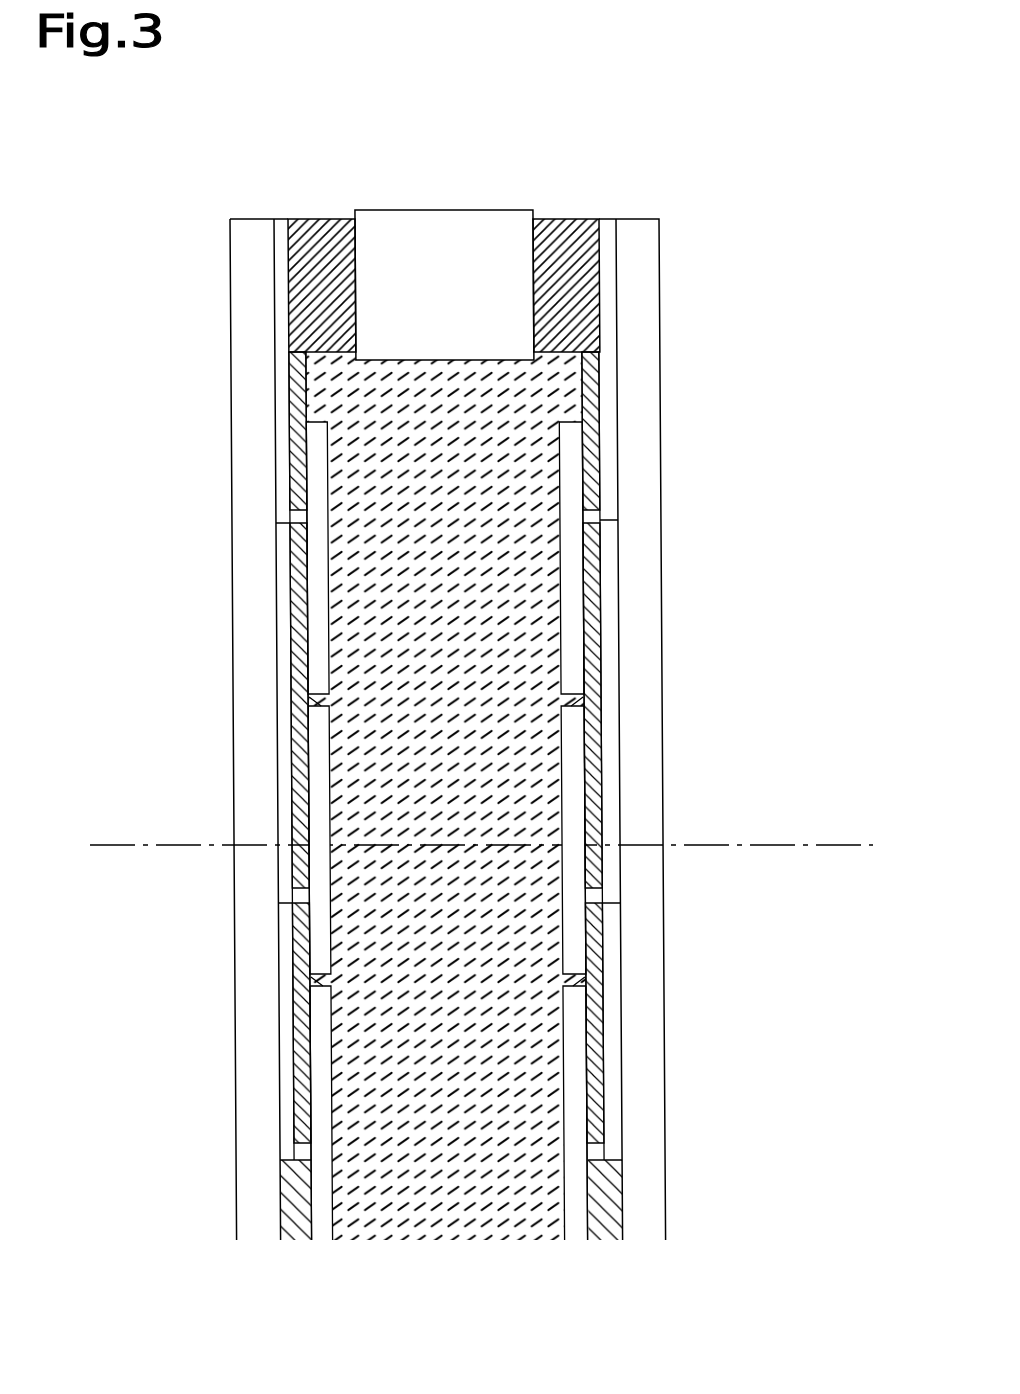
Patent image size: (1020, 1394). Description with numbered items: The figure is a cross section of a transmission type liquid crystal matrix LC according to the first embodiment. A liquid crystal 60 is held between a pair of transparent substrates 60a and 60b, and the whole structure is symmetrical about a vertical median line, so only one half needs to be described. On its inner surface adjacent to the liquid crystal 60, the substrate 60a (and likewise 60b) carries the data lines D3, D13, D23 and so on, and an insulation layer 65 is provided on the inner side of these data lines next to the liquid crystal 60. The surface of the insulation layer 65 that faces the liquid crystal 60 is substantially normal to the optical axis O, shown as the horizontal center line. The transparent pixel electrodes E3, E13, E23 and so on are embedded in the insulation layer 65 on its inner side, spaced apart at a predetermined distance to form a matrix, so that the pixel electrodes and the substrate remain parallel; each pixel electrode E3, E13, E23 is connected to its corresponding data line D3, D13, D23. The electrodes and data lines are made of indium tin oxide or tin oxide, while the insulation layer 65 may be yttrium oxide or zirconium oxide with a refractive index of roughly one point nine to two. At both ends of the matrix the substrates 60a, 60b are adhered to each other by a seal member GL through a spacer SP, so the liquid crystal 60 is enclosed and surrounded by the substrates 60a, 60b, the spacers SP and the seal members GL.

The liquid crystal matrix LC is at (746, 119).
The seal member GL is at (312, 222).
The spacer SP is at (428, 237).
The liquid crystal 60 is at (481, 641).
The transparent substrate 60a is at (250, 330).
The transparent substrate 60b is at (643, 343).
The data line D3 is at (278, 465).
The transparent pixel electrode E3 is at (318, 542).
The data line D13 is at (280, 680).
The transparent pixel electrode E13 is at (318, 828).
The data line D23 is at (285, 1018).
The transparent pixel electrode E23 is at (320, 1102).
The insulation layer 65 is at (297, 740).
The optical axis O is at (754, 843).